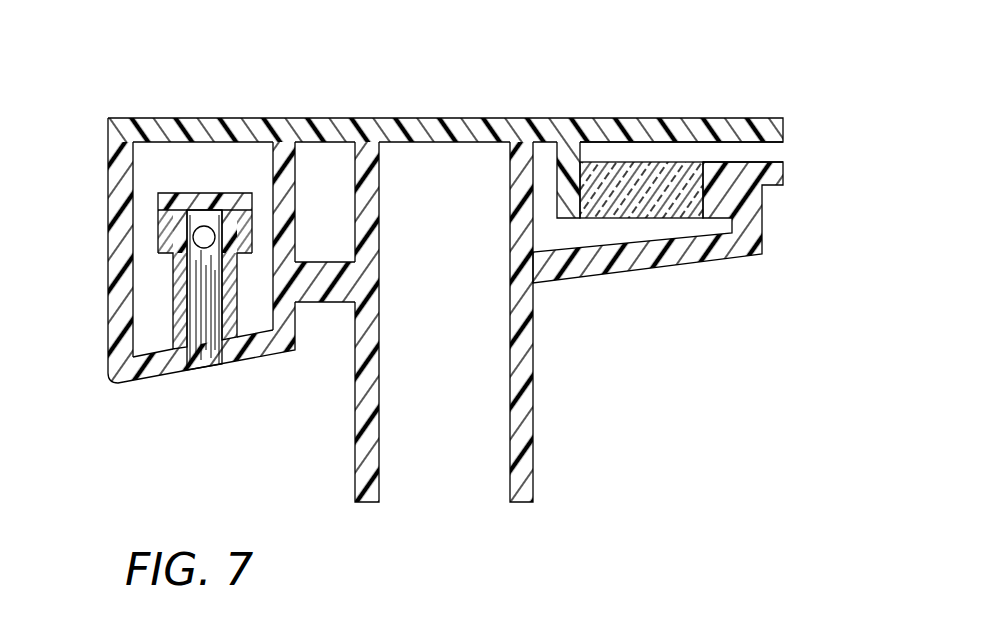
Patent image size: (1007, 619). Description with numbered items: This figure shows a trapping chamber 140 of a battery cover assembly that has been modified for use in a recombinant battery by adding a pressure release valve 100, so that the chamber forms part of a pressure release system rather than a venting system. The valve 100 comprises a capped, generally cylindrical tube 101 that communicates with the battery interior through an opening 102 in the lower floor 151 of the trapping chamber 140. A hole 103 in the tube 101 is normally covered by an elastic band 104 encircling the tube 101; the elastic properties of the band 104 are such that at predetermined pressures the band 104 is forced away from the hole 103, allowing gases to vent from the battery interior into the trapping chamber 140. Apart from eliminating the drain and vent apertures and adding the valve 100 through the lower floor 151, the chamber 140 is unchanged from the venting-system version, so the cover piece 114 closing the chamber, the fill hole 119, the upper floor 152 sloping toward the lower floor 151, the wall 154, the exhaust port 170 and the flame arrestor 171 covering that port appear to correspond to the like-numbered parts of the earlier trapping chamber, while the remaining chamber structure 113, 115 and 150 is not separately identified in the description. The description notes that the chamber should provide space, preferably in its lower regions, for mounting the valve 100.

The pressure release valve 100 is at (191, 178).
The capped, generally cylindrical tube 101 is at (177, 273).
The opening 102 is at (210, 364).
The hole 103 is at (205, 226).
The elastic band 104 is at (158, 226).
The inclined wall 113 is at (640, 263).
The top flange 114 is at (686, 117).
The top plate 115 is at (453, 118).
The channel between stems 119 is at (447, 478).
The trapping chamber 140 is at (563, 77).
The side wall 150 is at (113, 282).
The lower floor 151 is at (164, 343).
The slot 152 is at (578, 248).
The connecting web 154 is at (275, 278).
The opening 170 is at (777, 155).
The seal 171 is at (690, 207).